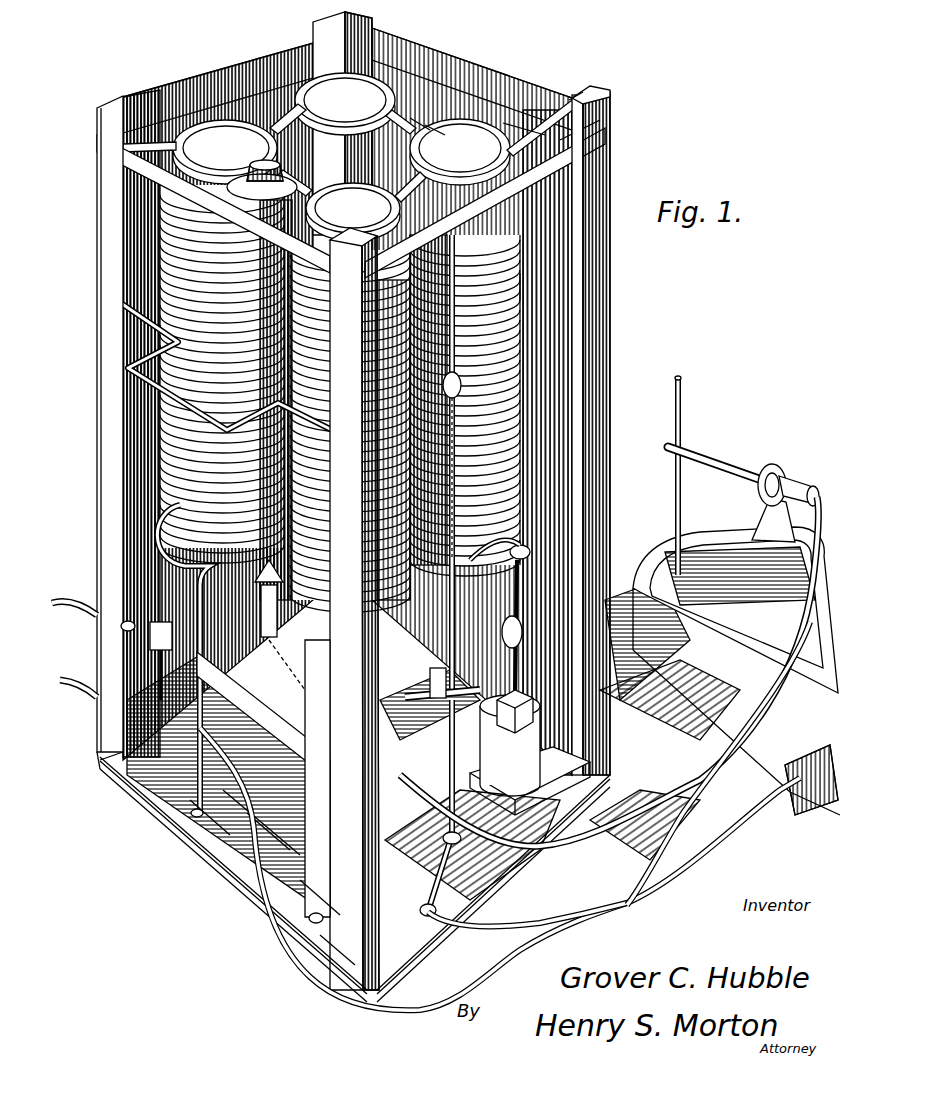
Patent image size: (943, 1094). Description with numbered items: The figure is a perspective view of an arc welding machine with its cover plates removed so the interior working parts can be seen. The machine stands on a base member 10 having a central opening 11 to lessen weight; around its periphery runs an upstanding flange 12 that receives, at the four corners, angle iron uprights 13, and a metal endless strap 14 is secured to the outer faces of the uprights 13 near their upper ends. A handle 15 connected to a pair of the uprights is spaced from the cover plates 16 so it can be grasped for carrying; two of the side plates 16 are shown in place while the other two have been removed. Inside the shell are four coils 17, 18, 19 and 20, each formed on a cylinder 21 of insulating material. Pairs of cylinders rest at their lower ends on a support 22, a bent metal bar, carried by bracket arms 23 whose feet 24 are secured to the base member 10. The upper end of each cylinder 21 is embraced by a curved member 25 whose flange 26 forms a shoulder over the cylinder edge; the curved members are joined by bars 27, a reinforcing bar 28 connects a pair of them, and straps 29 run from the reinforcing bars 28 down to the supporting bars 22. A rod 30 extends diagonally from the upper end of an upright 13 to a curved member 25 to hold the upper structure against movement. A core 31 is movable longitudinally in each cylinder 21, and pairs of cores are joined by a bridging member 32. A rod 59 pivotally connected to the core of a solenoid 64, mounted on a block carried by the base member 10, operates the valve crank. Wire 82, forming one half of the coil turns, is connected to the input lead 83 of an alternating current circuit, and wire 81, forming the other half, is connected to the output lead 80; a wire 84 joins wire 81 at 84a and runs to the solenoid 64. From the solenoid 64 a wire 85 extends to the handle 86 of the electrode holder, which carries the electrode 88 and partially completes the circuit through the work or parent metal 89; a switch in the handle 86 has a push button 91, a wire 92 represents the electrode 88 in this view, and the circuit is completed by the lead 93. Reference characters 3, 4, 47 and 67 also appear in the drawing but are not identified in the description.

The frame bar 3 is at (503, 123).
The apparatus 4 is at (345, 446).
The base member 10 is at (253, 887).
The central opening 11 is at (223, 790).
The upstanding flange 12 is at (190, 800).
The angle iron uprights 13 is at (360, 35).
The metal endless strap 14 is at (560, 168).
The handle 15 is at (127, 390).
The cover plates 16 is at (127, 483).
The coil 17 is at (130, 250).
The coil 18 is at (425, 110).
The coil 19 is at (520, 273).
The coil 20 is at (457, 322).
The cylinder 21 is at (213, 132).
The support 22 is at (530, 556).
The bracket arms 23 is at (330, 895).
The feet 24 is at (345, 945).
The curved member 25 is at (551, 115).
The flange 26 is at (415, 88).
The bars 27 is at (440, 119).
The reinforcing bar 28 is at (285, 52).
The straps 29 is at (253, 68).
The rod 30 is at (569, 100).
The core 31 is at (193, 700).
The bridging member 32 is at (190, 800).
The slow valve dial 47 is at (122, 208).
The rod 59 is at (535, 662).
The solenoid 64 is at (600, 742).
The bracket bar 67 is at (730, 467).
The output lead 80 is at (105, 614).
The wire 81 is at (127, 643).
The wire 82 is at (130, 570).
The input lead 83 is at (75, 702).
The wire 84 is at (247, 813).
The connection 84a is at (90, 756).
The wire 85 is at (507, 863).
The handle 86 is at (800, 475).
The electrode 88 is at (679, 482).
The work or parent metal 89 is at (718, 763).
The push button 91 is at (782, 466).
The wire 92 is at (622, 910).
The lead 93 is at (328, 700).